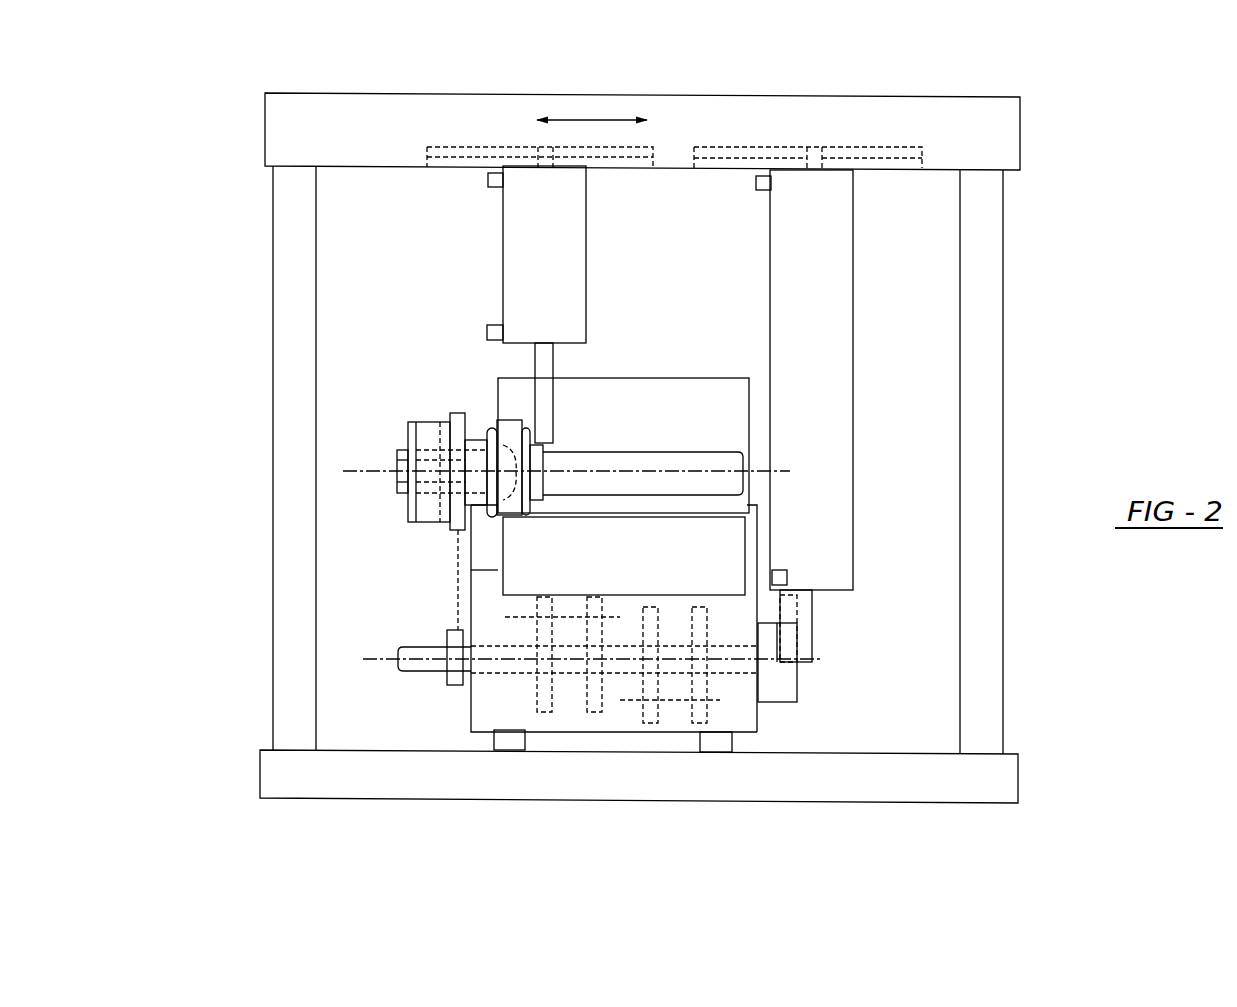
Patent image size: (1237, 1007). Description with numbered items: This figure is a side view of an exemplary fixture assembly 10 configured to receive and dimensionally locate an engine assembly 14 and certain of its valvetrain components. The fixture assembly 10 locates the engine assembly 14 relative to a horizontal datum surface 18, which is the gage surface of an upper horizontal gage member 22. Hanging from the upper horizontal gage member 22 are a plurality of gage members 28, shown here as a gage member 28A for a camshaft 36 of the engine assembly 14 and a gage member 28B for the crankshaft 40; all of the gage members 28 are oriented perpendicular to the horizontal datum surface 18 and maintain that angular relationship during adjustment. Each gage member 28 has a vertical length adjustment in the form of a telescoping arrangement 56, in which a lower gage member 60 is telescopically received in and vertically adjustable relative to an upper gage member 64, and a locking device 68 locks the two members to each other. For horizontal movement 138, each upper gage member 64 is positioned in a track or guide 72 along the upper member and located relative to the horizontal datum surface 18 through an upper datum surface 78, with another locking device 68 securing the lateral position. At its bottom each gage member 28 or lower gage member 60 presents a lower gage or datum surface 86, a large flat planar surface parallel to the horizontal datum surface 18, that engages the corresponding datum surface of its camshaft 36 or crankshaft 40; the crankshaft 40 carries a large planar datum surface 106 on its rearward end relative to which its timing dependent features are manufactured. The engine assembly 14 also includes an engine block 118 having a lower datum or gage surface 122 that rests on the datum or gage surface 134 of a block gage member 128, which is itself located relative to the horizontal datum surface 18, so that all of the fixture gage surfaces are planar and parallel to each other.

The fixture assembly 10 is at (1104, 134).
The engine assembly 14 is at (425, 398).
The horizontal datum surface 18 is at (353, 167).
The upper horizontal gage member 22 is at (290, 92).
The gage members 28 is at (887, 280).
The gage member 28A is at (575, 236).
The gage member 28B is at (840, 246).
The camshaft 36 is at (667, 462).
The crankshaft 40 is at (425, 672).
The telescoping arrangement 56 is at (448, 378).
The lower gage member 60 is at (535, 363).
The upper gage member 64 is at (503, 263).
The locking device 68 is at (488, 180).
The track or guide 72 is at (475, 147).
The upper datum surface 78 is at (903, 173).
The lower gage or datum surface 86 is at (560, 445).
The planar datum surface 106 is at (782, 662).
The engine block 118 is at (760, 527).
The lower datum or gage surface 122 is at (612, 722).
The block gage member 128 is at (987, 782).
The datum or gage surface 134 is at (508, 730).
The horizontal movement 138 is at (596, 119).